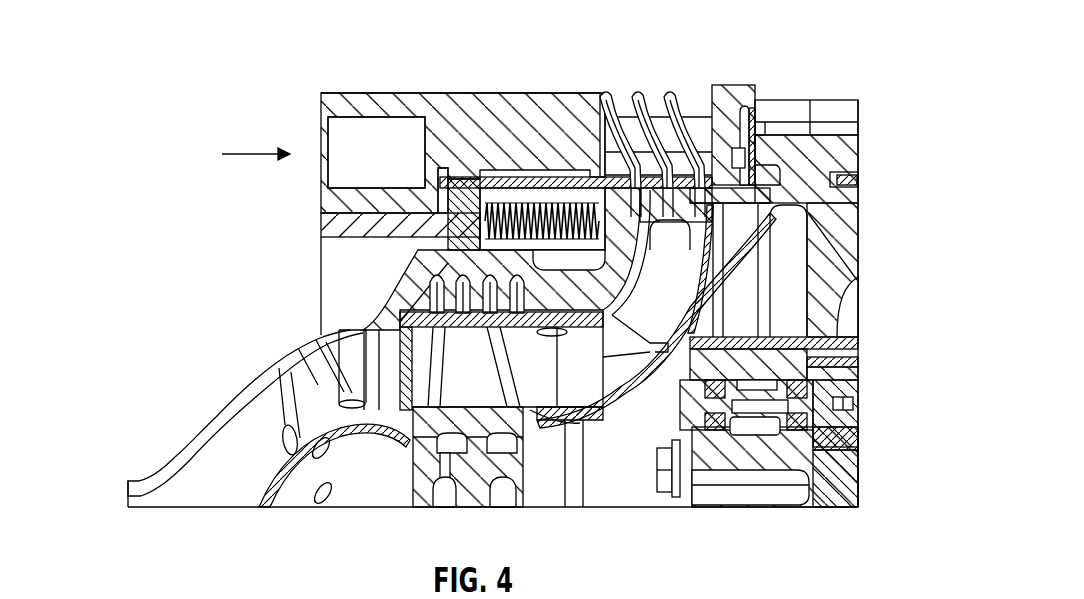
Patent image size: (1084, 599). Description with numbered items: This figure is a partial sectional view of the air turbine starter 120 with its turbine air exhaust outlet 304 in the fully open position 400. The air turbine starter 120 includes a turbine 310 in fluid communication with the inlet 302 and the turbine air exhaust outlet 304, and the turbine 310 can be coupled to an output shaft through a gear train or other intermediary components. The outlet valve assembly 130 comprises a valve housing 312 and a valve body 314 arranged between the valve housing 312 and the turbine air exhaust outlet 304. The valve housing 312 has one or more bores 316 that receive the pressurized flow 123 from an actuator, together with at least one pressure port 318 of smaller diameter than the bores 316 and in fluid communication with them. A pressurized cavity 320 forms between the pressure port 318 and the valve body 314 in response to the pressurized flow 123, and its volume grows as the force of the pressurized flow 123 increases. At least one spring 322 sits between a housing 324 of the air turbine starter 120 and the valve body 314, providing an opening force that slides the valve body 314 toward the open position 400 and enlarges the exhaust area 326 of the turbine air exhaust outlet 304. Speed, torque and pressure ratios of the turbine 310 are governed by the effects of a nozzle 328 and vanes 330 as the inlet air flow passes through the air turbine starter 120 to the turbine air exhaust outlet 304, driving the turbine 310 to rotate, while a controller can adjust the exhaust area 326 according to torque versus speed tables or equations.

The air turbine starter 120 is at (864, 123).
The pressurized flow 123 is at (250, 150).
The outlet valve assembly 130 is at (296, 86).
The inlet 302 is at (128, 498).
The turbine air exhaust outlet 304 is at (686, 100).
The turbine 310 is at (455, 378).
The valve housing 312 is at (505, 102).
The valve body 314 is at (566, 205).
The bores 316 is at (340, 154).
The pressure port 318 is at (430, 182).
The pressurized cavity 320 is at (447, 180).
The spring 322 is at (620, 112).
The housing 324 is at (668, 100).
The exhaust area 326 is at (740, 196).
The nozzle 328 is at (275, 478).
The vanes 330 is at (663, 298).
The fully open position 400 is at (625, 191).